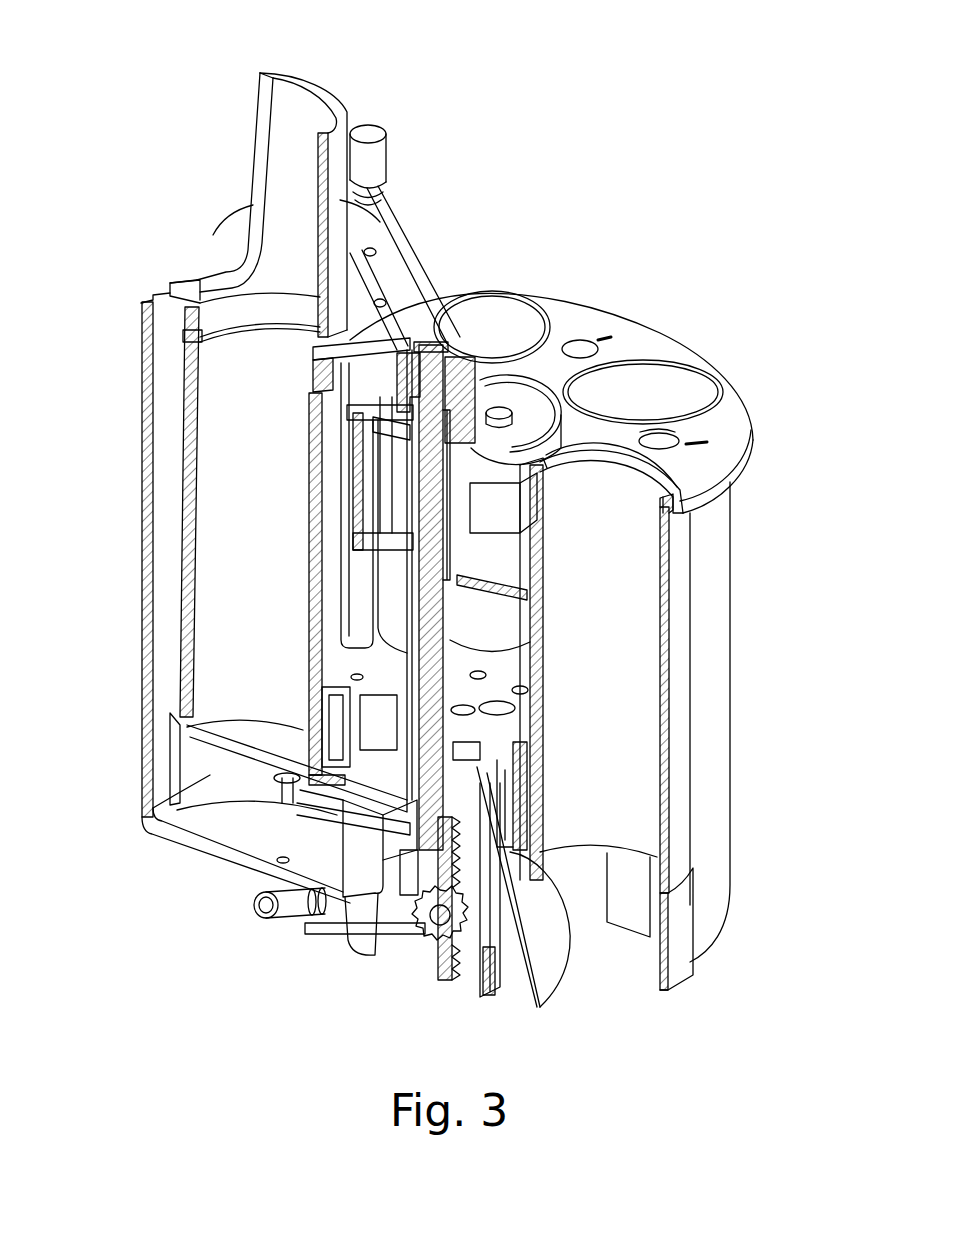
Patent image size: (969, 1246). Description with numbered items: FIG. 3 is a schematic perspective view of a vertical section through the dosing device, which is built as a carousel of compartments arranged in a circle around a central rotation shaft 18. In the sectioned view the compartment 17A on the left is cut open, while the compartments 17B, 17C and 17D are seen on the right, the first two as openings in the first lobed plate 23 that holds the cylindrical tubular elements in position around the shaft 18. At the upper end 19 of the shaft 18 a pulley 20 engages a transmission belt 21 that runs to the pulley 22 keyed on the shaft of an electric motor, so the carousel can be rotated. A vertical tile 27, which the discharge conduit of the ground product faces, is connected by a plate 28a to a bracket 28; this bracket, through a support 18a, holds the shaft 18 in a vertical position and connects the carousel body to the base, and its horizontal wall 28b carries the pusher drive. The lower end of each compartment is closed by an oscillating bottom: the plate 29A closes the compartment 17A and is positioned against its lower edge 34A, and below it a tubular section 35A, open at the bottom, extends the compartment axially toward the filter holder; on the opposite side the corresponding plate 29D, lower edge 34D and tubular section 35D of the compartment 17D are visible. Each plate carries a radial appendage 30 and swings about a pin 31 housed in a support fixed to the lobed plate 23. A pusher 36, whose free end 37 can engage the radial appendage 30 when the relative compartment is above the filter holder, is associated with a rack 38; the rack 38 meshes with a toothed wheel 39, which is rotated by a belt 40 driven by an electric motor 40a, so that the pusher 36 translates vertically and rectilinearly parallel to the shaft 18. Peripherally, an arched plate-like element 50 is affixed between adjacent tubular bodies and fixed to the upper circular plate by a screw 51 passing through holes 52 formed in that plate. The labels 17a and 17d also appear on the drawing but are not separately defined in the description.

The vertical tile 27 is at (306, 98).
The pulley 22 is at (378, 164).
The transmission belt 21 is at (412, 348).
The plate 28a is at (188, 280).
The bracket 28 is at (163, 584).
The compartment 17A is at (205, 493).
The tube rim 17a is at (253, 327).
The tubular section 35A is at (170, 760).
The lower edge 34A is at (255, 725).
The plate 29A is at (247, 737).
The central rotation shaft 18 is at (440, 628).
The radial appendage 30 is at (526, 740).
The free end 37 is at (545, 770).
The pin 31 is at (565, 805).
The first lobed plate 23 is at (727, 453).
The compartment 17B is at (482, 318).
The compartment 17C is at (687, 388).
The holes 52 is at (587, 345).
The screw 51 is at (675, 432).
The notch 17d is at (650, 470).
The upper end 19 is at (480, 405).
The pulley 20 is at (503, 408).
The compartment 17D is at (637, 700).
The arched plate-like element 50 is at (712, 797).
The tubular section 35D is at (680, 968).
The lower edge 34D is at (590, 847).
The plate 29D is at (553, 970).
The pusher 36 is at (470, 977).
The toothed wheel 39 is at (440, 945).
The belt 40 is at (437, 942).
The electric motor 40a is at (340, 920).
The rack 38 is at (400, 925).
The support 18a is at (258, 890).
The horizontal wall 28b is at (300, 890).